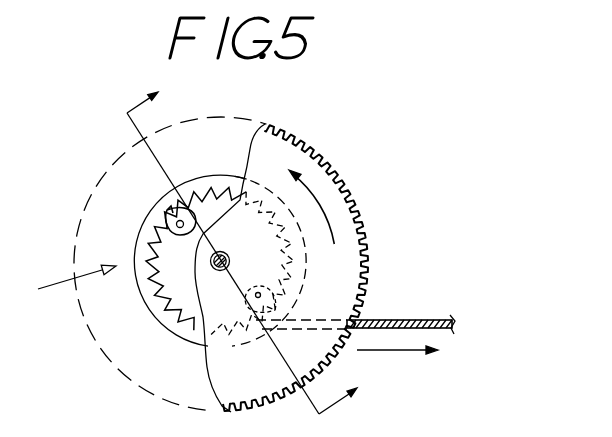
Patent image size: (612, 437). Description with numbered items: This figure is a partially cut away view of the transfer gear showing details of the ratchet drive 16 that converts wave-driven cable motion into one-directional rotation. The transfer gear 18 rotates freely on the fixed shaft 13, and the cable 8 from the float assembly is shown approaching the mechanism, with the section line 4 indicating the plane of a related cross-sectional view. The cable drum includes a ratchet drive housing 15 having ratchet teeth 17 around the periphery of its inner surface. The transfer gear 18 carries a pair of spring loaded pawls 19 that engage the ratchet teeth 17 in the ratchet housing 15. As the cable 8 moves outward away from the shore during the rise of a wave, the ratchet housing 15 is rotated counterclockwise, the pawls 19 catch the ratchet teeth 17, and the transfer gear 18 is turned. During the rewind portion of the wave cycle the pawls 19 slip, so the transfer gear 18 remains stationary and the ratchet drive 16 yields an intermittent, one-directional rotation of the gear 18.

The section line 4- 4 is at (250, 247).
The cable 8 is at (420, 320).
The fixed shaft 13 is at (223, 252).
The ratchet drive housing 15 is at (188, 180).
The ratchet drive 16 is at (64, 283).
The ratchet teeth 17 is at (168, 307).
The transfer gear 18 is at (343, 187).
The spring loaded pawls 19 is at (189, 223).